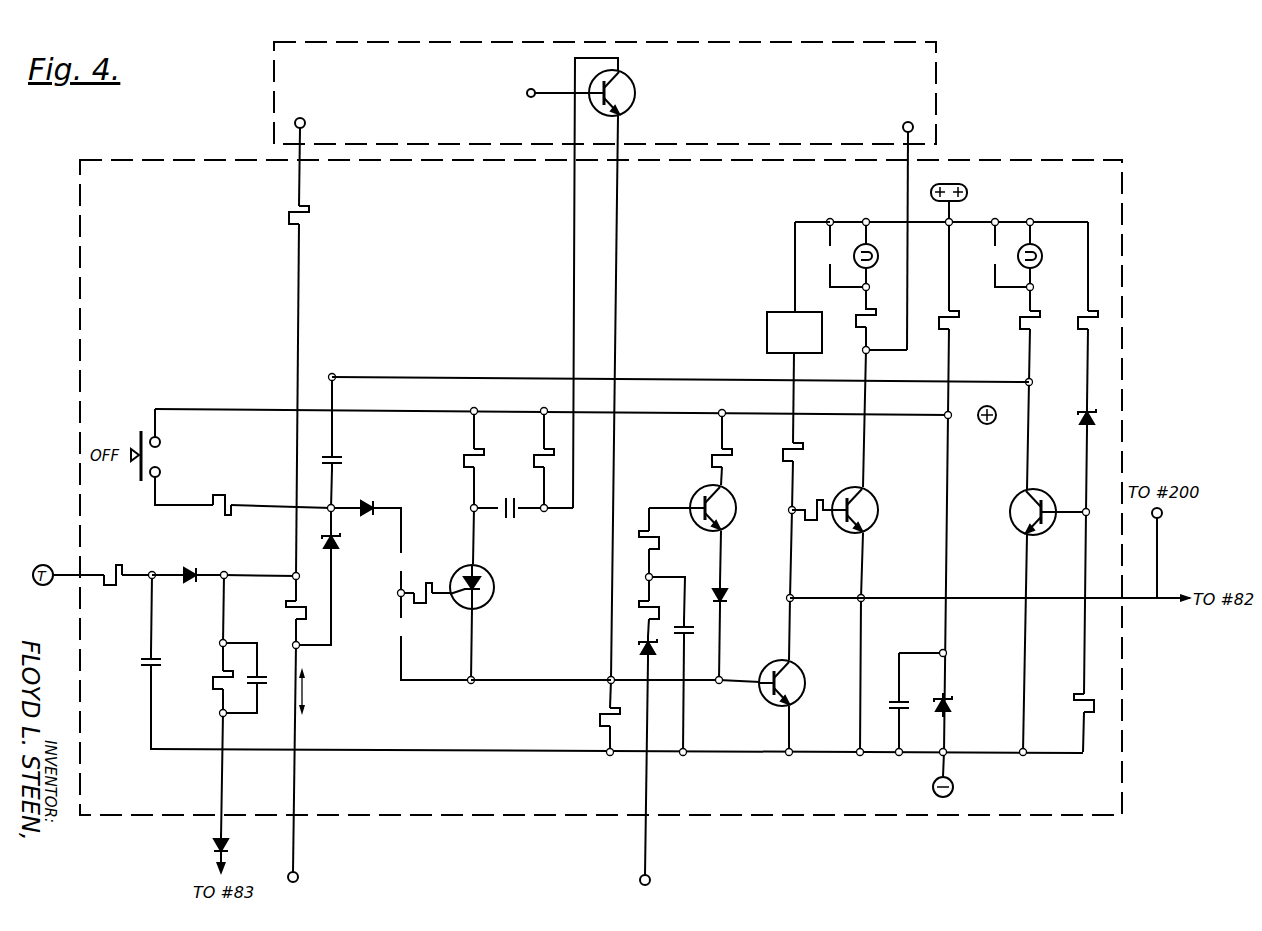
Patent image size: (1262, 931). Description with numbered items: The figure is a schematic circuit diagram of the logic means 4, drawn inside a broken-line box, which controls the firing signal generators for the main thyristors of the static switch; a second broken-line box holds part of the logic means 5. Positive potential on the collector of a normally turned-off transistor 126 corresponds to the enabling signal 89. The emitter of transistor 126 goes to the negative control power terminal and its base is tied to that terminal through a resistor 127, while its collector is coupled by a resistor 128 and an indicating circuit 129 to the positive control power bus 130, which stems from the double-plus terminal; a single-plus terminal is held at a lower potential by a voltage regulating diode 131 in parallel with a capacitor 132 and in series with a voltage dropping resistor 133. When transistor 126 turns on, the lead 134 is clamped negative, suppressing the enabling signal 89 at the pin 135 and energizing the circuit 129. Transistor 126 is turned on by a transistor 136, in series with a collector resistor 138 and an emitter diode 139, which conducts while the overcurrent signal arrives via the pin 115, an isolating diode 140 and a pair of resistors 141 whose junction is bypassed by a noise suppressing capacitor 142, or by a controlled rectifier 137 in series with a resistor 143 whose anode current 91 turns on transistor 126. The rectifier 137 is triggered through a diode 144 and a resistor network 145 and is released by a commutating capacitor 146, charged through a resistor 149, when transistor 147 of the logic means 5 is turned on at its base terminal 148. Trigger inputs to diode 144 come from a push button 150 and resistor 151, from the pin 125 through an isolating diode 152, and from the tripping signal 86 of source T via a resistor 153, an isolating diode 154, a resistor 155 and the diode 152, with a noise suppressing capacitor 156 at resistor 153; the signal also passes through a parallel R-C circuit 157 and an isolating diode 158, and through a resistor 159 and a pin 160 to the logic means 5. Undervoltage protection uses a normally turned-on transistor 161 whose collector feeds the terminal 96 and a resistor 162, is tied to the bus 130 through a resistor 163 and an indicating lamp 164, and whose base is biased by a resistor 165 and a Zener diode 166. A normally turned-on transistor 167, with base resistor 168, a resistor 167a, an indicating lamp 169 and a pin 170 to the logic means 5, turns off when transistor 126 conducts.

The logic means 4 is at (80, 208).
The logic means 5 is at (274, 93).
The tripping signal 86 is at (211, 558).
The enabling signal 89 is at (1003, 592).
The anode current 91 is at (562, 673).
The terminal 96 is at (331, 371).
The pin 115 is at (644, 888).
The pin 125 is at (294, 887).
The transistor 126 is at (800, 671).
The resistor 127 is at (600, 720).
The resistor 128 is at (804, 456).
The indicating circuit 129 is at (794, 332).
The positive control power bus 130 is at (812, 219).
The voltage regulating diode 131 is at (953, 709).
The capacitor 132 is at (890, 702).
The voltage dropping resistor 133 is at (943, 326).
The lead 134 is at (907, 592).
The pin 135 is at (1163, 513).
The transistor 136 is at (736, 500).
The controlled rectifier 137 is at (496, 594).
The collector resistor 138 is at (712, 460).
The emitter diode 139 is at (729, 595).
The isolating diode 140 is at (642, 650).
The resistors 141 is at (638, 540).
The noise suppressing capacitor 142 is at (695, 637).
The resistor 143 is at (464, 460).
The diode 144 is at (367, 498).
The resistor network 145 is at (432, 609).
The capacitor 146 is at (509, 519).
The transistor 147 is at (636, 86).
The base terminal 148 is at (539, 94).
The resistor 149 is at (535, 460).
The push button 150 is at (162, 457).
The resistor 151 is at (228, 500).
The isolating diode 152 is at (340, 545).
The resistor 153 is at (113, 566).
The isolating diode 154 is at (190, 588).
The resistor 155 is at (285, 612).
The noise suppressing capacitor 156 is at (140, 660).
The parallel R-C circuit 157 is at (240, 686).
The isolating diode 158 is at (213, 844).
The resistor 159 is at (289, 223).
The pin 160 is at (303, 119).
The transistor 161 is at (1012, 502).
The resistor 162 is at (343, 449).
The resistor 163 is at (1022, 326).
The indicating lamp 164 is at (1040, 266).
The resistor 165 is at (1081, 326).
The Zener diode 166 is at (1080, 422).
The transistor 167 is at (880, 500).
The resistor 167a is at (858, 325).
The base resistor 168 is at (814, 522).
The indicating lamp 169 is at (874, 266).
The pin 170 is at (905, 121).